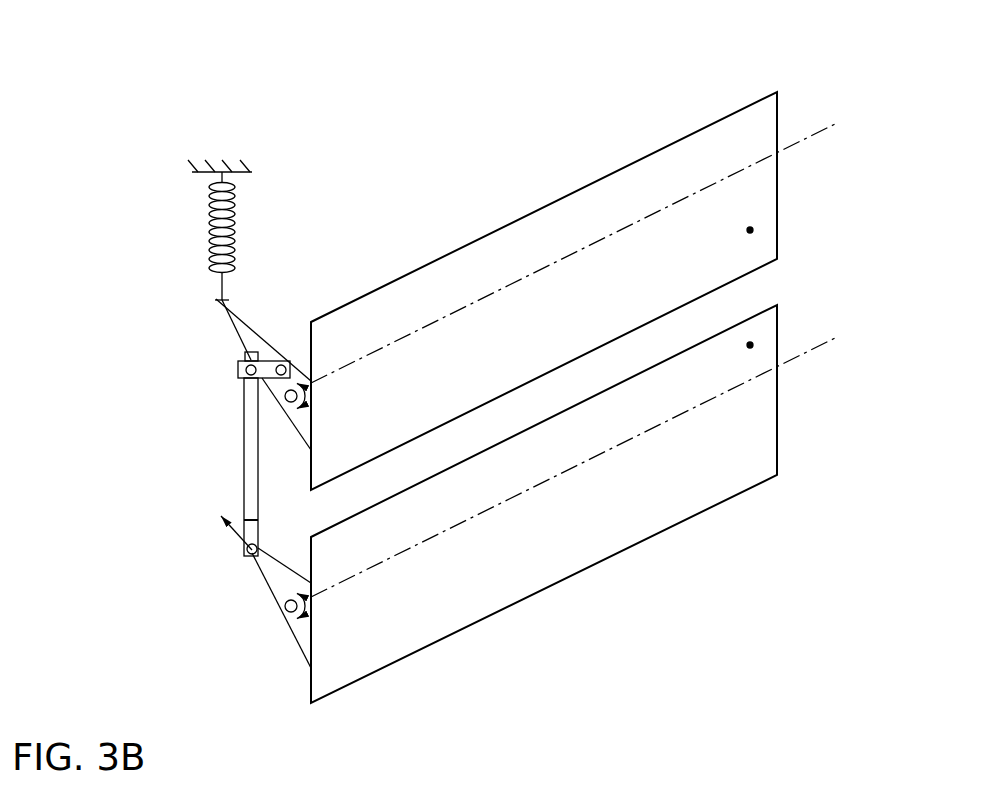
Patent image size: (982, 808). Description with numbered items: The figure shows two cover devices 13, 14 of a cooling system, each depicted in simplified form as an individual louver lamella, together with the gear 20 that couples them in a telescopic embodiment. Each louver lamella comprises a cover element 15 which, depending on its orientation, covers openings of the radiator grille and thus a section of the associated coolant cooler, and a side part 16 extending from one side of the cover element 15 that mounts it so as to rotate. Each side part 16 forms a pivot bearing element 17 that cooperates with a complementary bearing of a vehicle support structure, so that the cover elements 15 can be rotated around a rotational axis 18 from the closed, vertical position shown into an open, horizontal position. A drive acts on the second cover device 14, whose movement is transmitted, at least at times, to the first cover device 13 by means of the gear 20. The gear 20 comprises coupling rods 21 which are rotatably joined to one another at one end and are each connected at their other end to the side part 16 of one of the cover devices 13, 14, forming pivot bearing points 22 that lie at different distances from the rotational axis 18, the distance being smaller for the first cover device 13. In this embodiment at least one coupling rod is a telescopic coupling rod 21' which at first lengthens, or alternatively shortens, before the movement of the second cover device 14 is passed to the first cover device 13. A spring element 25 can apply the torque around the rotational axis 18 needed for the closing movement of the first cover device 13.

The first cover device 13 is at (798, 93).
The second cover device 14 is at (792, 445).
The cover element 15 is at (808, 287).
The side part 16 is at (232, 322).
The pivot bearing element 17 is at (284, 398).
The rotational axis 18 is at (806, 138).
The gear 20 is at (195, 372).
The coupling rod 21 is at (264, 326).
The telescopic coupling rod 21' is at (192, 467).
The pivot bearing point 22 is at (281, 363).
The spring element 25 is at (211, 218).